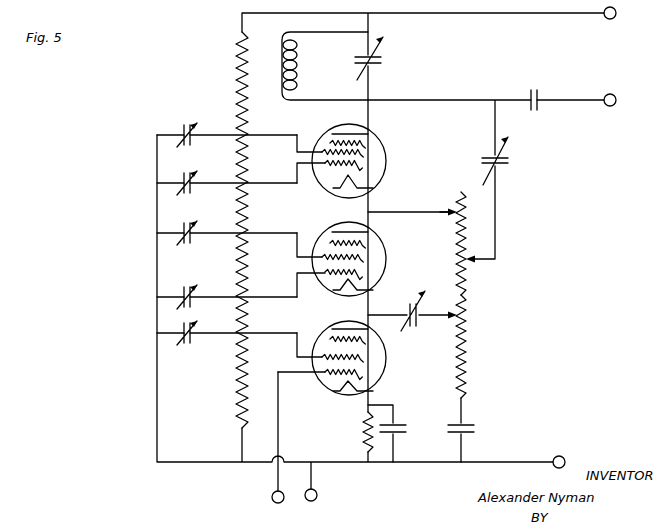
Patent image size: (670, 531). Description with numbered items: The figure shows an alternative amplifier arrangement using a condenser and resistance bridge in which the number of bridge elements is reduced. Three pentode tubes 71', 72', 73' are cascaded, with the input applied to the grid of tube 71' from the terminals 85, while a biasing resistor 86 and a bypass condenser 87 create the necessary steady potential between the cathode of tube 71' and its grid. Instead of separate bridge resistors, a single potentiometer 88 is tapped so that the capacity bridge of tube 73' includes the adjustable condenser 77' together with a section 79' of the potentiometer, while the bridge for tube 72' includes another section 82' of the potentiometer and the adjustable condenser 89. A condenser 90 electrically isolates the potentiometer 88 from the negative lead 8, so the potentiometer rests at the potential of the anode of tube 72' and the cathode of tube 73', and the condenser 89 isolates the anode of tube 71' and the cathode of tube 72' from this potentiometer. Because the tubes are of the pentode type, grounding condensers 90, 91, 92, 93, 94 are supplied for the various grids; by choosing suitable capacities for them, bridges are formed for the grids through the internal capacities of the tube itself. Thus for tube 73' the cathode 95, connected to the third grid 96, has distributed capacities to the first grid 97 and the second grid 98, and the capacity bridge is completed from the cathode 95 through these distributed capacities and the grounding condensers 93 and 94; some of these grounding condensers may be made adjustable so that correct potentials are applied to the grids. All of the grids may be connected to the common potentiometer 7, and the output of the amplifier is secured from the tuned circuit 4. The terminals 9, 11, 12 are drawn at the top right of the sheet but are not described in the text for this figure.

The common potentiometer 7 is at (237, 86).
The tuned circuit 4 is at (356, 58).
The terminal 9 is at (616, 10).
The condenser 11 is at (530, 91).
The terminal 12 is at (616, 97).
The grounding condenser 94 is at (196, 135).
The grounding condenser 93 is at (196, 183).
The grounding condenser 92 is at (196, 233).
The grounding condenser 91 is at (196, 297).
The condenser 90 is at (474, 445).
The tube 73' is at (362, 161).
The tube 72' is at (362, 259).
The tube 71' is at (362, 358).
The third grid 96 is at (325, 135).
The second grid 98 is at (370, 150).
The first grid 97 is at (363, 170).
The cathode 95 is at (338, 181).
The adjustable condenser 77' is at (502, 161).
The section of the potentiometer 79' is at (438, 222).
The section of the potentiometer 82' is at (478, 243).
The potentiometer 88 is at (461, 366).
The adjustable condenser 89 is at (419, 315).
The biasing resistor 86 is at (361, 445).
The bypass condenser 87 is at (396, 435).
The negative lead 8 is at (572, 456).
The terminals 85 is at (294, 505).